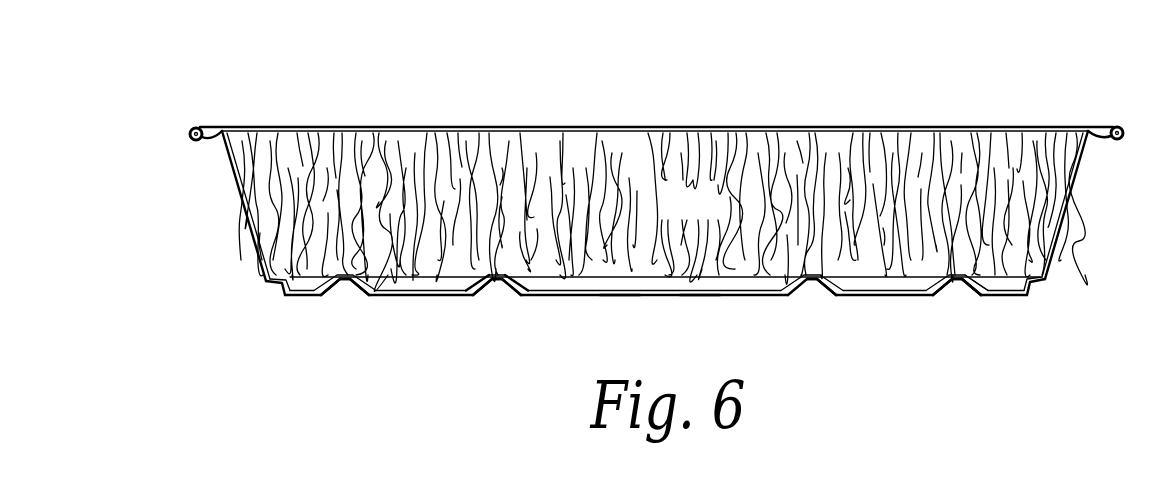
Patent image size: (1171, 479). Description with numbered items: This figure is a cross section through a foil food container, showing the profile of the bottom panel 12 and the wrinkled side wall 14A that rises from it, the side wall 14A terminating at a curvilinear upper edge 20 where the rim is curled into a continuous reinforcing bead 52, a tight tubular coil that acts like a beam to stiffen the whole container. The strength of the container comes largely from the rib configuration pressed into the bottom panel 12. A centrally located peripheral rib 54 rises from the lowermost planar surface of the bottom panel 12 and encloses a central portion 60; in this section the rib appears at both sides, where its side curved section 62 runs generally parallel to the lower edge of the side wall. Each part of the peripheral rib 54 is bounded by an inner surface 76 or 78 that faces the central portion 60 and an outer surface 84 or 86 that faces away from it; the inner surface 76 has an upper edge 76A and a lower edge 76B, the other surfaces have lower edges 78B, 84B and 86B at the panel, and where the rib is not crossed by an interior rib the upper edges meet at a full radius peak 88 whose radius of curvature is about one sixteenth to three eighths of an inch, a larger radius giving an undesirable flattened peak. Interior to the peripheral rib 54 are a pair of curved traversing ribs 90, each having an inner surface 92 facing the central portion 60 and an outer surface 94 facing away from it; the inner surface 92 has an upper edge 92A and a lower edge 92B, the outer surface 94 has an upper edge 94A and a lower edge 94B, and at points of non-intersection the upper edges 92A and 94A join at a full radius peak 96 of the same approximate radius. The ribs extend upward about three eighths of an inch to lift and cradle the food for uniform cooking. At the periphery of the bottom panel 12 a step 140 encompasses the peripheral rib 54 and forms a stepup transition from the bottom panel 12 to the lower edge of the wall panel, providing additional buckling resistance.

The bottom panel 12 is at (592, 299).
The side wall 14A is at (708, 212).
The upper edge 20 is at (729, 126).
The reinforcing bead 52 is at (1120, 128).
The peripheral rib 54 is at (338, 299).
The central portion 60 is at (697, 297).
The side curved section 62 is at (607, 297).
The inner surface 76 is at (351, 292).
The upper edge 76A is at (350, 277).
The lower edge 76B is at (370, 297).
The inner surface 78 is at (957, 291).
The lower edge 78B is at (940, 291).
The outer surface 84 is at (268, 288).
The lower edge 84B is at (326, 299).
The outer surface 86 is at (1008, 289).
The lower edge 86B is at (988, 291).
The full radius peak 88 is at (345, 277).
The traversing rib 90 is at (485, 294).
The inner surface 92 is at (500, 298).
The upper edge 92A is at (497, 300).
The lower edge 92B is at (509, 298).
The outer surface 94 is at (481, 287).
The upper edge 94A is at (476, 283).
The lower edge 94B is at (474, 300).
The full radius peak 96 is at (533, 278).
The step 140 is at (1034, 285).